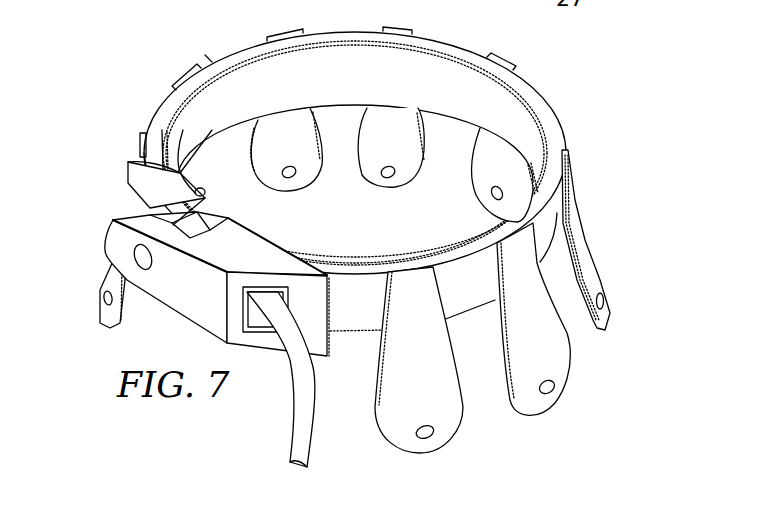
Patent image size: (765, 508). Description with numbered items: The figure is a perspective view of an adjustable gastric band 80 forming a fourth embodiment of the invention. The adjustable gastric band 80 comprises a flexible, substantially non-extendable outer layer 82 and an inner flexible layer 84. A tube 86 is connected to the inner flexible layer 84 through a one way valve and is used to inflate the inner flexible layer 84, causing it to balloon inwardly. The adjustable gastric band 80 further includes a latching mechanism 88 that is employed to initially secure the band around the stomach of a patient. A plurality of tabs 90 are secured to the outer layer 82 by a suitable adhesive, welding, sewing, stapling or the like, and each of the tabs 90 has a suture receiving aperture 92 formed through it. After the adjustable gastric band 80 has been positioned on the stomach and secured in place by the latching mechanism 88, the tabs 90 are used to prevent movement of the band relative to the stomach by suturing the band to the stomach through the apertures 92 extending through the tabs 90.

The adjustable gastric band 80 is at (212, 62).
The outer layer 82 is at (341, 305).
The inner flexible layer 84 is at (452, 80).
The tube 86 is at (288, 416).
The latching mechanism 88 is at (107, 232).
The tabs 90 is at (222, 184).
The suture receiving aperture 92 is at (203, 196).